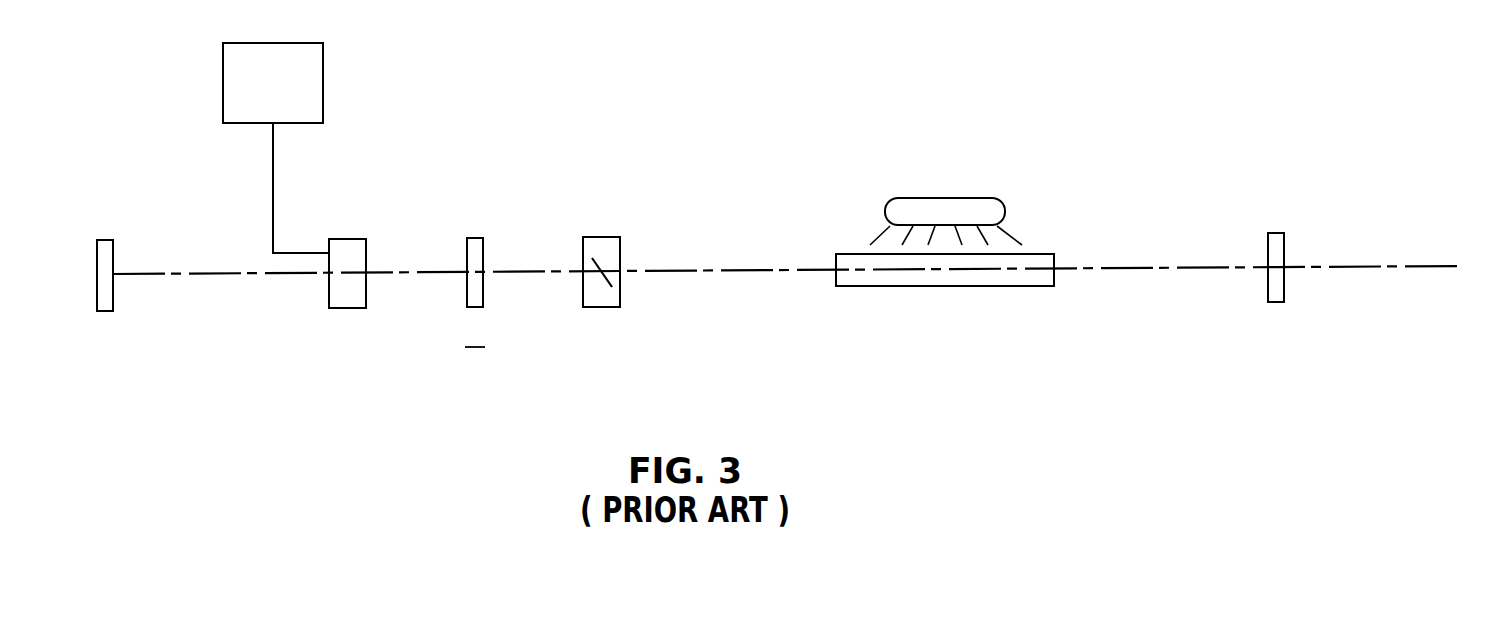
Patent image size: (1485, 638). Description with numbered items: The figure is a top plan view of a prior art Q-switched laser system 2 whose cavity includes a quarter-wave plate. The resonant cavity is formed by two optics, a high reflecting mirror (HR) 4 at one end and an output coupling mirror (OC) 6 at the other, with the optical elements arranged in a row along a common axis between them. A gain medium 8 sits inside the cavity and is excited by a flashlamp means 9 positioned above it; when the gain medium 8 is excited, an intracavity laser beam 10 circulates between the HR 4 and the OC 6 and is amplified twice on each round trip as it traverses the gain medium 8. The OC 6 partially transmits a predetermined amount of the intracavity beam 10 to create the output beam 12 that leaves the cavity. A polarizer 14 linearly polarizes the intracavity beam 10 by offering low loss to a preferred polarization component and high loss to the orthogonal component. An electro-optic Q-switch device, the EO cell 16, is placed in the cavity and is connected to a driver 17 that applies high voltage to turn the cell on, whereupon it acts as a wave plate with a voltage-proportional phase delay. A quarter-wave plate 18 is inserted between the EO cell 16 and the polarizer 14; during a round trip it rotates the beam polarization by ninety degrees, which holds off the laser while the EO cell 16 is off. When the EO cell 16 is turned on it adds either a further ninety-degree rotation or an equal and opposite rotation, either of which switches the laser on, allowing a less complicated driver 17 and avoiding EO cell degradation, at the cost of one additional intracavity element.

The Q-switched laser system 2 is at (1099, 87).
The high reflecting mirror (HR) 4 is at (105, 240).
The output coupling mirror (OC) 6 is at (1275, 233).
The gain medium 8 is at (1040, 254).
The flashlamp means 9 is at (990, 197).
The intracavity laser beam 10 is at (1157, 268).
The output beam 12 is at (1387, 267).
The polarizer 14 is at (607, 237).
The electro-optic Q-switch device (EO cell) 16 is at (346, 239).
The driver 17 is at (321, 63).
The quarter-wave plate 18 is at (475, 238).